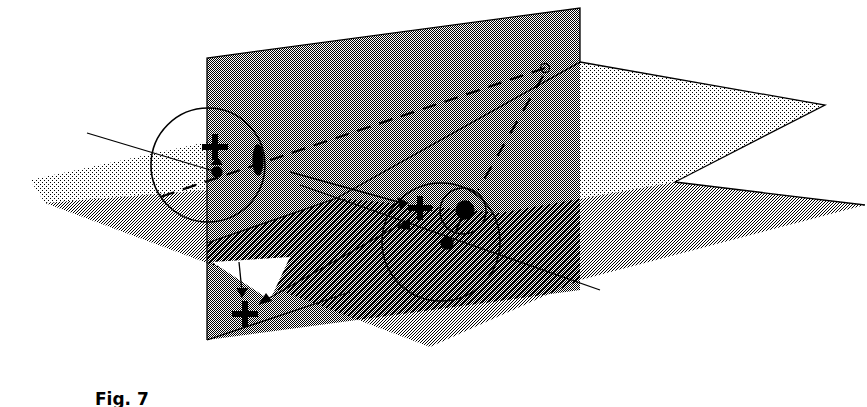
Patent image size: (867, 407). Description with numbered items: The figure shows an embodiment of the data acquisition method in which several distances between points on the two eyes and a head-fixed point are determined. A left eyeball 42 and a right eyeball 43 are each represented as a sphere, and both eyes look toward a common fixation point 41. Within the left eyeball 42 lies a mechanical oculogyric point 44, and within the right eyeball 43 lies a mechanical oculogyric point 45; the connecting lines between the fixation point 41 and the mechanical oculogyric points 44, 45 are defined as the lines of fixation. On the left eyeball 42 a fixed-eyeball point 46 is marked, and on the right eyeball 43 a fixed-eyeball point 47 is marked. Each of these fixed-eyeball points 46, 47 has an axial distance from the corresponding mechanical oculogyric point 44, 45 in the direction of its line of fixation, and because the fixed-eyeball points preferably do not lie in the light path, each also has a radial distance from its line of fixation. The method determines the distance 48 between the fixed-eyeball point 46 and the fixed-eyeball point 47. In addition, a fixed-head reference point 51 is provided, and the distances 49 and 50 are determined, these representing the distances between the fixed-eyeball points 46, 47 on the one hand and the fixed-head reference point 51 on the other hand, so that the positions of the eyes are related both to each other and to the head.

The fixation point 41 is at (543, 64).
The left eyeball 42 is at (172, 133).
The right eyeball 43 is at (478, 296).
The mechanical oculogyric point 44 is at (202, 170).
The mechanical oculogyric point 45 is at (445, 249).
The fixed-eyeball point 46 is at (215, 135).
The fixed-eyeball point 47 is at (416, 203).
The distance 48 is at (346, 186).
The distance 49 is at (238, 270).
The distance 50 is at (333, 262).
The fixed-head reference point 51 is at (245, 326).